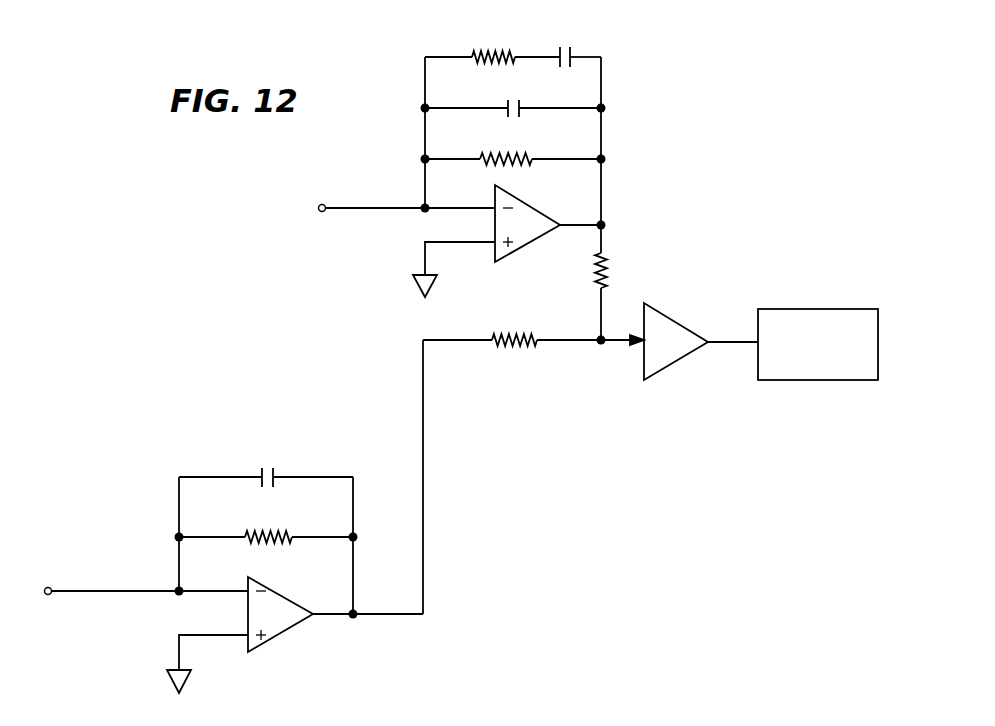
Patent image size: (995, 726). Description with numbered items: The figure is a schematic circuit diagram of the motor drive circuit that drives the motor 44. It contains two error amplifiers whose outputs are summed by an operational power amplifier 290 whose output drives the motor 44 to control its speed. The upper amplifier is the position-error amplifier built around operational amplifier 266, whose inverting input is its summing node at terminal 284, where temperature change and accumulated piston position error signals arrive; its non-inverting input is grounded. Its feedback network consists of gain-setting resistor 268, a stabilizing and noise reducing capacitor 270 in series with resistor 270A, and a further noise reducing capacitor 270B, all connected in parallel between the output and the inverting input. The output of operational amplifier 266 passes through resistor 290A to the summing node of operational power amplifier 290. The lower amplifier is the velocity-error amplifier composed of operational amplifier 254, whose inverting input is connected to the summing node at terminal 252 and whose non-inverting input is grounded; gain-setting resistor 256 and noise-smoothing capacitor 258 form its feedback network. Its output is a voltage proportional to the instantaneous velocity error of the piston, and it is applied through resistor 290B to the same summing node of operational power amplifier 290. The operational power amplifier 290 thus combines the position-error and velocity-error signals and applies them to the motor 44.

The resistor 270A is at (499, 52).
The stabilizing and noise reducing capacitor 270 is at (571, 50).
The noise reducing capacitor 270B is at (520, 114).
The gain-setting resistor 268 is at (518, 166).
The operational amplifier 266 is at (530, 235).
The terminal 284 is at (321, 204).
The resistor 290A is at (611, 262).
The resistor 290B is at (525, 346).
The operational power amplifier 290 is at (668, 360).
The motor 44 is at (832, 311).
The noise-smoothing capacitor 258 is at (262, 473).
The gain-setting resistor 256 is at (275, 533).
The operational amplifier 254 is at (282, 602).
The terminal 252 is at (49, 587).